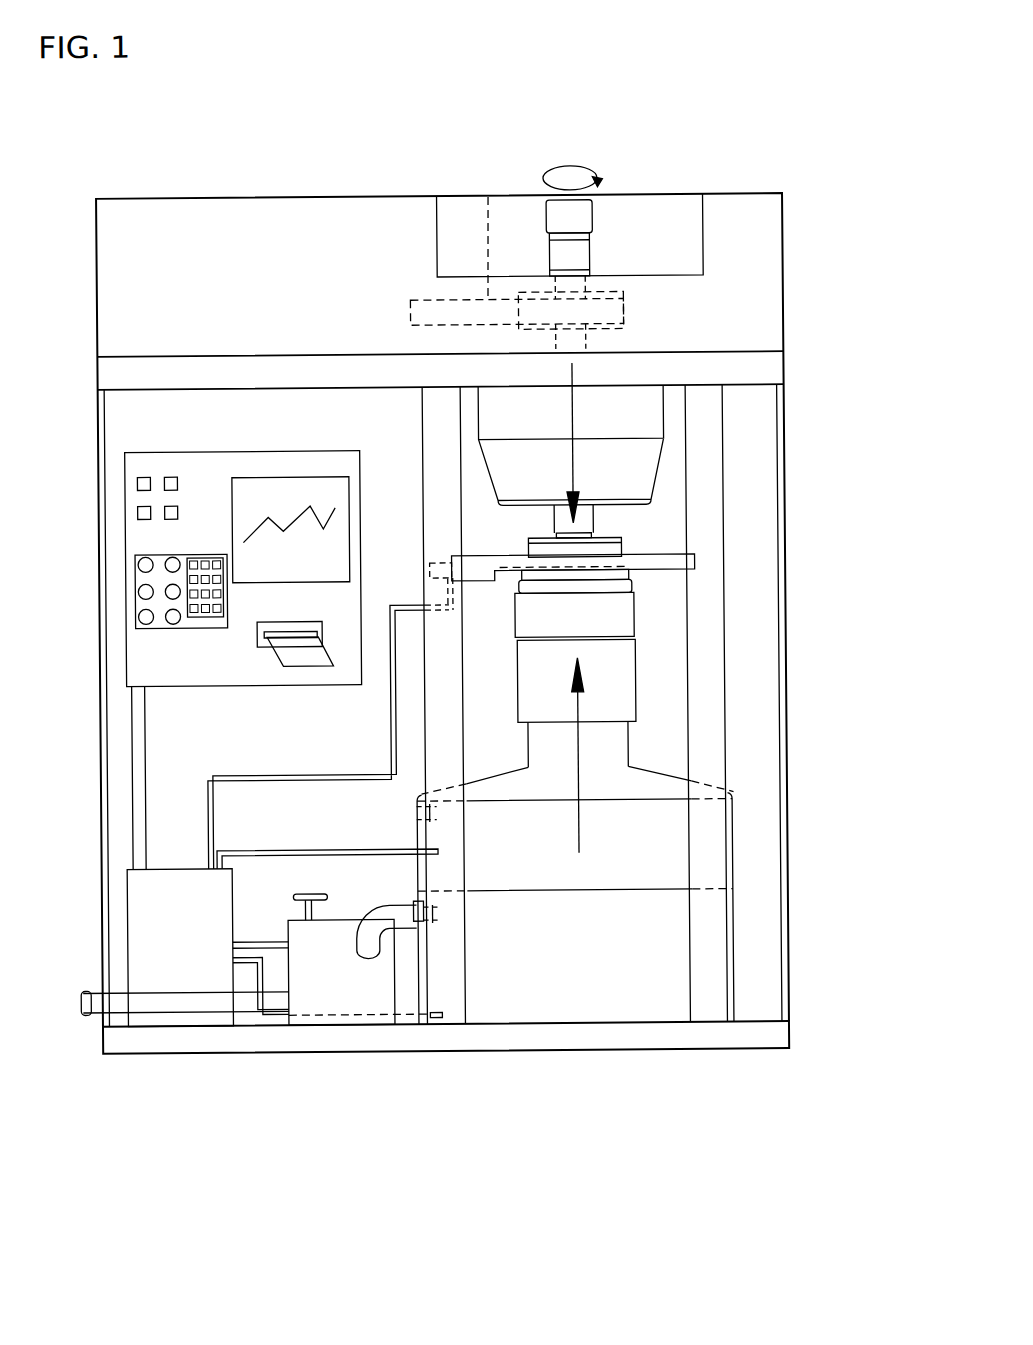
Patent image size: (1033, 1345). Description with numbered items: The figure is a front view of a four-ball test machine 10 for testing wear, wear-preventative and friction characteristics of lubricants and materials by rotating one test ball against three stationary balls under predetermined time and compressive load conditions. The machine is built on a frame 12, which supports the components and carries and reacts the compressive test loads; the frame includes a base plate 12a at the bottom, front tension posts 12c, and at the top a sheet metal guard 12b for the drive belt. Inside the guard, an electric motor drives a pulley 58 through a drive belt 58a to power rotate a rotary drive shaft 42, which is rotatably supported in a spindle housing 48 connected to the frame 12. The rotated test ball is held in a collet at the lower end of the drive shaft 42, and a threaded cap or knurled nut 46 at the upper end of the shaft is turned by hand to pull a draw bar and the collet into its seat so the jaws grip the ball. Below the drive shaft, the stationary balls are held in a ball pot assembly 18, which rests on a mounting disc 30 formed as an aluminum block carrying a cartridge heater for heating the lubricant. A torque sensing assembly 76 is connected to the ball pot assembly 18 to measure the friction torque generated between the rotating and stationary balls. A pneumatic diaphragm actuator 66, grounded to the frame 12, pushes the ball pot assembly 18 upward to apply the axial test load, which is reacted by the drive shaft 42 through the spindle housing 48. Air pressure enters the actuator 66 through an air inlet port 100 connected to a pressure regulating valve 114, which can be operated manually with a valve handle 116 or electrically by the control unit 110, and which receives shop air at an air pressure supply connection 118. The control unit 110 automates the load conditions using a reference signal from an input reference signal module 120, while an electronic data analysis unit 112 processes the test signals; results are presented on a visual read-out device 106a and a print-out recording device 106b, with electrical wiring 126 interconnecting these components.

The four-ball test machine 10 is at (128, 152).
The frame 12 is at (99, 496).
The base plate 12a is at (676, 1052).
The sheet metal guard for drive belt 12b is at (218, 251).
The tension posts 12c is at (464, 965).
The ball pot assembly 18 is at (622, 530).
The mounting disc 30 is at (633, 625).
The rotary drive shaft 42 is at (594, 519).
The threaded cap/knurled nut 46 is at (596, 213).
The spindle housing 48 is at (635, 414).
The pulley 58 is at (653, 265).
The drive belt 58a is at (492, 198).
The actuator 66 is at (602, 994).
The torque sensing assembly 76 is at (694, 542).
The air inlet port 100 is at (424, 927).
The visual/graphic read-out device 106a is at (336, 574).
The recording/print-out device 106b is at (257, 636).
The control unit 110 is at (192, 936).
The electronic data analysis unit 112 is at (180, 451).
The pressure regulating valve 114 is at (358, 998).
The valve handle for manual pressure control 116 is at (320, 892).
The air pressure supply connection 118 is at (78, 1007).
The input reference signal module 120 is at (136, 596).
The electrical wiring 126 is at (129, 761).